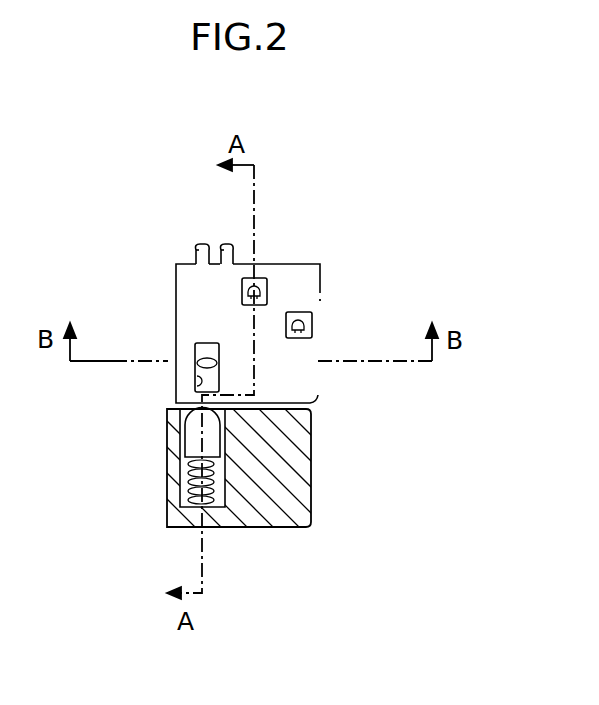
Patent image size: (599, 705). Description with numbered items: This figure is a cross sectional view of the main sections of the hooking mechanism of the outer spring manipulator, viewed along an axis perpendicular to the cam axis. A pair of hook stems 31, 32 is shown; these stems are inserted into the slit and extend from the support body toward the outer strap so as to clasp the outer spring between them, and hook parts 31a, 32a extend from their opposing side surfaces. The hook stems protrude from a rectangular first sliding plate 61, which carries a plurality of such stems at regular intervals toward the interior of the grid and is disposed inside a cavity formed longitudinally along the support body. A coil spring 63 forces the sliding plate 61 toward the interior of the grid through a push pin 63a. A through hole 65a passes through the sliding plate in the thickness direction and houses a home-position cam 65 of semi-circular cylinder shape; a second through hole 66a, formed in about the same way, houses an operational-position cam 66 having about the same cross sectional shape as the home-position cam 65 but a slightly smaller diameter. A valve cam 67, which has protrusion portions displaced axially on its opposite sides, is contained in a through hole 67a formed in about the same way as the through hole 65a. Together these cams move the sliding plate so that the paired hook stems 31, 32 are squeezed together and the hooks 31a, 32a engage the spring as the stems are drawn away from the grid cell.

The hook stem 31 is at (235, 255).
The hook part 31a is at (222, 247).
The hook stem 32 is at (195, 257).
The hook part 32a is at (195, 245).
The first sliding plate 61 is at (297, 271).
The coil spring 63 is at (230, 492).
The push pin 63a is at (230, 436).
The home-position cam 65 is at (247, 288).
The through hole 65a is at (263, 283).
The operational-position cam 66 is at (298, 338).
The through hole 66a is at (309, 325).
The valve cam 67 is at (205, 363).
The through hole 67a is at (205, 388).